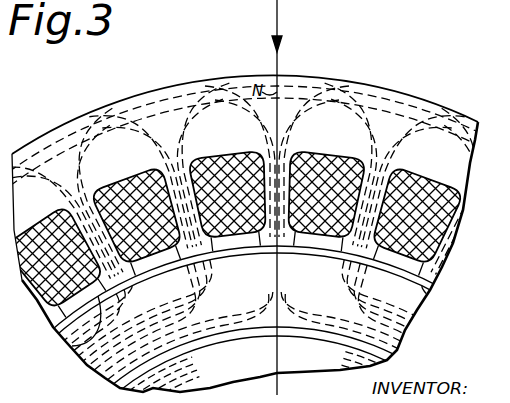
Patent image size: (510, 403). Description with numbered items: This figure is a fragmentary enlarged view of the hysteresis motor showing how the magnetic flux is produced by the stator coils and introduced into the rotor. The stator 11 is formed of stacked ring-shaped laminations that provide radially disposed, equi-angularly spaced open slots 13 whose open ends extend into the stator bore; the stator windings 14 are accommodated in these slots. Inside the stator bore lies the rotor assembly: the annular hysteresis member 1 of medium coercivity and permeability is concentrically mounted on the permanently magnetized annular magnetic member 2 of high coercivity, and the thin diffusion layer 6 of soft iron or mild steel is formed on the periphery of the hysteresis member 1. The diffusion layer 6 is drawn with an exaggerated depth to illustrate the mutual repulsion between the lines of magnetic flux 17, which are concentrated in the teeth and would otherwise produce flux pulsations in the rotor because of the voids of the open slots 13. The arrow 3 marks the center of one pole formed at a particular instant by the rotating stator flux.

The annular hysteresis member 1 is at (388, 302).
The annular magnetic member 2 is at (386, 364).
The arrow 3 is at (283, 58).
The diffusion layer 6 is at (55, 325).
The stator lamination 11 is at (333, 80).
The open slots 13 is at (213, 150).
The windings 14 is at (243, 162).
The lines of magnetic flux 17 is at (117, 130).